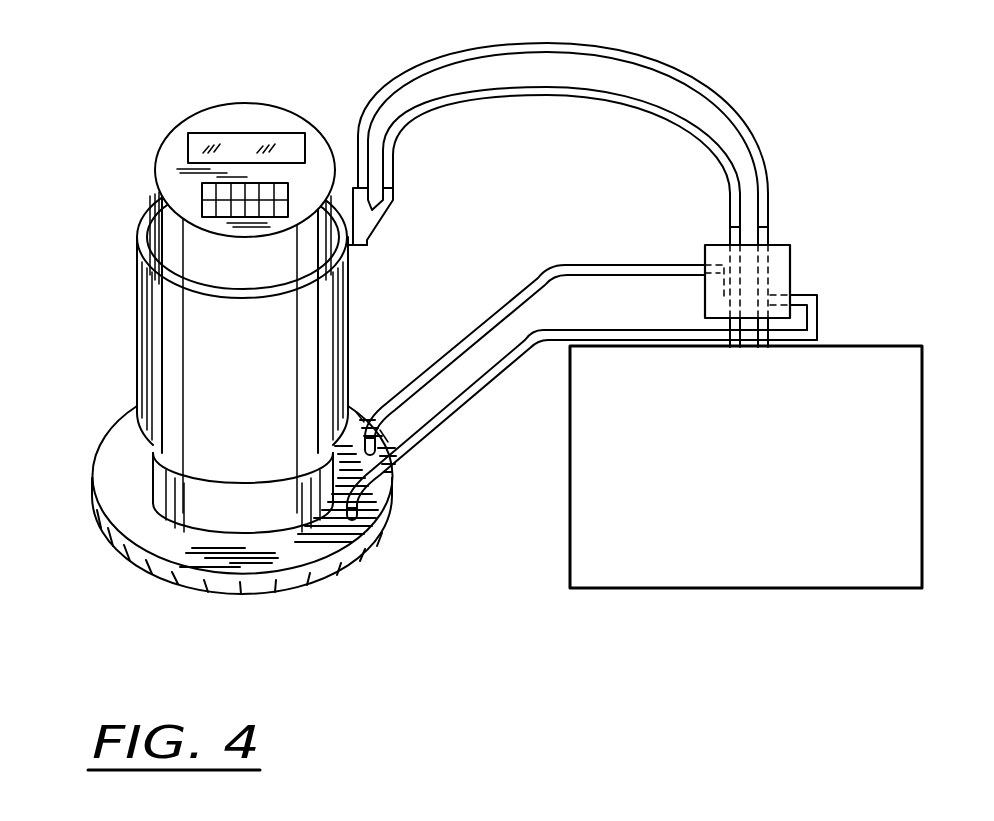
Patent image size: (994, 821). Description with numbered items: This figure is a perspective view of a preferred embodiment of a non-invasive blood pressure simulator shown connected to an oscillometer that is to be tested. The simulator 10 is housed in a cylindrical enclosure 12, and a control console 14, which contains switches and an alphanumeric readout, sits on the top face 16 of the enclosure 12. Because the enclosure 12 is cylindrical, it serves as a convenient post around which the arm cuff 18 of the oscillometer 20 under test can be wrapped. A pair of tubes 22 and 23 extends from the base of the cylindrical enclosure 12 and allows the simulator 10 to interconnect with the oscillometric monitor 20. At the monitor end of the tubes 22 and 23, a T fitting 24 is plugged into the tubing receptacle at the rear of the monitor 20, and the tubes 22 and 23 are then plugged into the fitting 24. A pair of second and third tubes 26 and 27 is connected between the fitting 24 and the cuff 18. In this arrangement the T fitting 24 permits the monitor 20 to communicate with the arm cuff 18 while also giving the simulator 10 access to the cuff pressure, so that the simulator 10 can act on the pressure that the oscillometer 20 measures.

The simulator 10 is at (95, 302).
The cylindrical enclosure 12 is at (145, 205).
The control console 14 is at (197, 133).
The top face 16 is at (283, 123).
The arm cuff 18 is at (350, 300).
The oscillometer 20 is at (728, 546).
The tube 22 is at (527, 288).
The tube 23 is at (450, 407).
The T fitting 24 is at (790, 247).
The second tube 26 is at (584, 45).
The third tube 27 is at (552, 98).